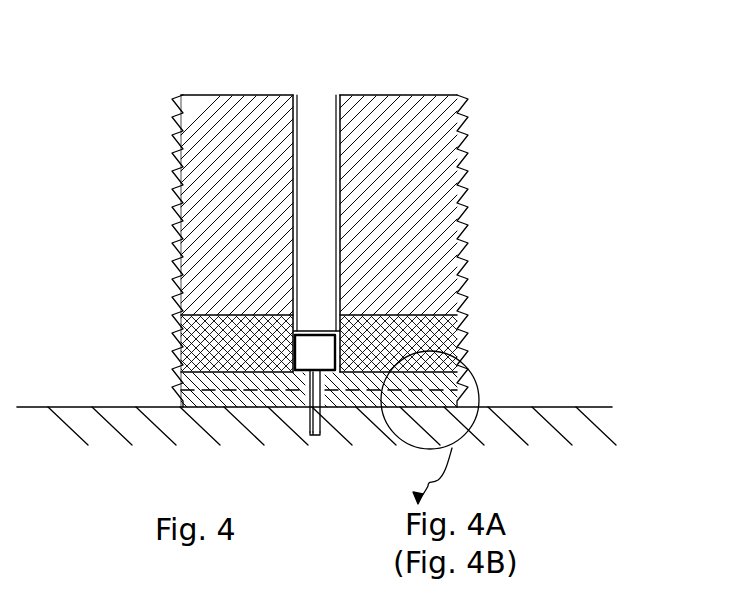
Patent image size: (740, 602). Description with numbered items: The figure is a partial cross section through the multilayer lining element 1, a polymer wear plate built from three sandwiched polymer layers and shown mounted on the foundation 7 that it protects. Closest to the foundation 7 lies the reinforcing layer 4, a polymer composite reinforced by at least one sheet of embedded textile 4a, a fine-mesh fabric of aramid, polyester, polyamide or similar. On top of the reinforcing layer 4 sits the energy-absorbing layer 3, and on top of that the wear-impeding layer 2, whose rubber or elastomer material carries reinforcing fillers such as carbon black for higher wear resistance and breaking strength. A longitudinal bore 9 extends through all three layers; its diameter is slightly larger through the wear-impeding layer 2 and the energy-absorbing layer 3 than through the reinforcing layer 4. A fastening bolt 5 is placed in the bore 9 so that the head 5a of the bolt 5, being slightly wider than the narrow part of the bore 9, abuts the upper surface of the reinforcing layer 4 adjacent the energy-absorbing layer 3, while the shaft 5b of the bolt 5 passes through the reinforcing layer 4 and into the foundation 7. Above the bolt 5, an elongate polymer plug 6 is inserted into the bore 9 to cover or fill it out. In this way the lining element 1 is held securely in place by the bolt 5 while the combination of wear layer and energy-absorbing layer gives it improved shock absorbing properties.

The lining element 1 is at (497, 141).
The wear-impeding layer 2 is at (458, 288).
The energy-absorbing layer 3 is at (458, 344).
The reinforcing layer 4 is at (458, 382).
The embedded textile 4a is at (462, 388).
The fastening bolt 5 is at (311, 430).
The head of the bolt 5a is at (308, 372).
The shaft of the bolt 5b is at (320, 417).
The elongate polymer plug 6 is at (305, 93).
The foundation 7 is at (47, 407).
The bore 9 is at (293, 164).